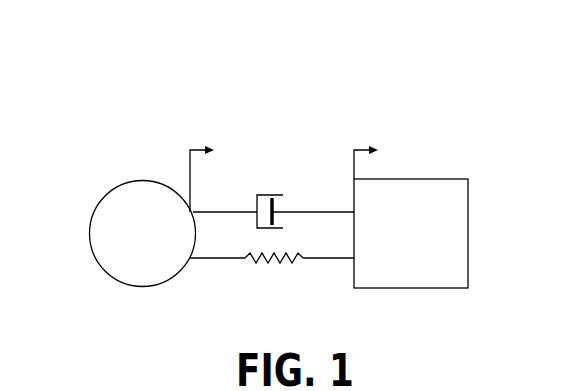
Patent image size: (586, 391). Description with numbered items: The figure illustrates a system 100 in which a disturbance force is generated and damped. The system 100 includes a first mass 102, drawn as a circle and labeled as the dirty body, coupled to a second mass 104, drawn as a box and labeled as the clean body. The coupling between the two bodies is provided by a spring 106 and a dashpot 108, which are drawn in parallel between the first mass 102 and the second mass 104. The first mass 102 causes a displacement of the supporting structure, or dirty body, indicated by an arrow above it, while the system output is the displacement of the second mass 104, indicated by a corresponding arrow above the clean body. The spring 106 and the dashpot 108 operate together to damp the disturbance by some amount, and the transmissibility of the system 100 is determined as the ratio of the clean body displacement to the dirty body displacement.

The system 100 is at (116, 49).
The first mass 102 is at (100, 199).
The second mass 104 is at (468, 234).
The spring 106 is at (260, 265).
The dashpot 108 is at (263, 169).